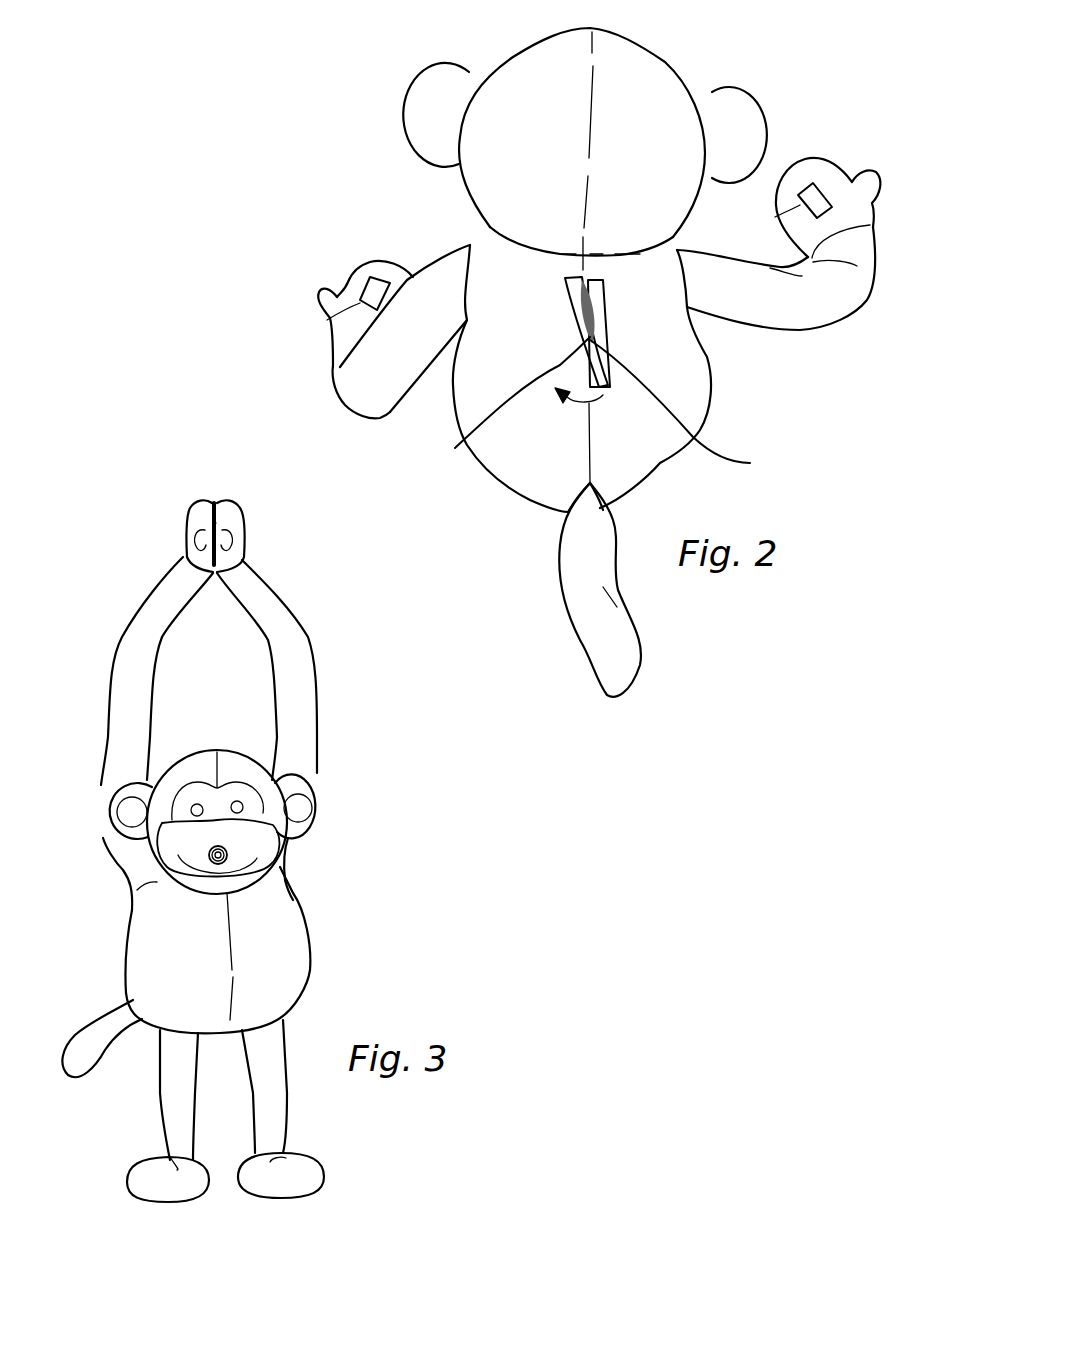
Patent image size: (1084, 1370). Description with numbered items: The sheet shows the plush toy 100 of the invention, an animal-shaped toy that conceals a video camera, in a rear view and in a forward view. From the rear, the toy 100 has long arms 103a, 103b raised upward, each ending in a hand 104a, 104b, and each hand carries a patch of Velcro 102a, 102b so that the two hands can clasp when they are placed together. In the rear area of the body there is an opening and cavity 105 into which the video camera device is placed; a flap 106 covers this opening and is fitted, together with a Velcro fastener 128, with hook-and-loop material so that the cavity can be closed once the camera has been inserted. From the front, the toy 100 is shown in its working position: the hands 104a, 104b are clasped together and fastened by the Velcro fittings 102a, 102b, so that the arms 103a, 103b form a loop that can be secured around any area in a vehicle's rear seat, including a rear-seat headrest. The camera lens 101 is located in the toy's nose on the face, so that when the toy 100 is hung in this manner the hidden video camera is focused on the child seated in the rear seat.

In FIG. 2, the plush toy 100 is at (380, 83).
In FIG. 3, the plush toy 100 is at (360, 914).
In FIG. 3, the camera lens 101 is at (228, 855).
In FIG. 2, the Velcro 102a is at (790, 219).
In FIG. 3, the Velcro 102a is at (205, 553).
In FIG. 2, the Velcro 102b is at (333, 320).
In FIG. 3, the Velcro 102b is at (222, 523).
In FIG. 2, the long arm 103a is at (824, 329).
In FIG. 3, the long arm 103a is at (120, 637).
In FIG. 2, the long arm 103b is at (343, 413).
In FIG. 3, the long arm 103b is at (317, 635).
In FIG. 2, the hand 104a is at (815, 158).
In FIG. 3, the hand 104a is at (190, 505).
In FIG. 2, the hand 104b is at (377, 260).
In FIG. 3, the hand 104b is at (240, 503).
In FIG. 2, the opening and cavity 105 is at (750, 463).
In FIG. 2, the flap 106 is at (452, 448).
In FIG. 2, the Velcro fastener 128 is at (600, 310).